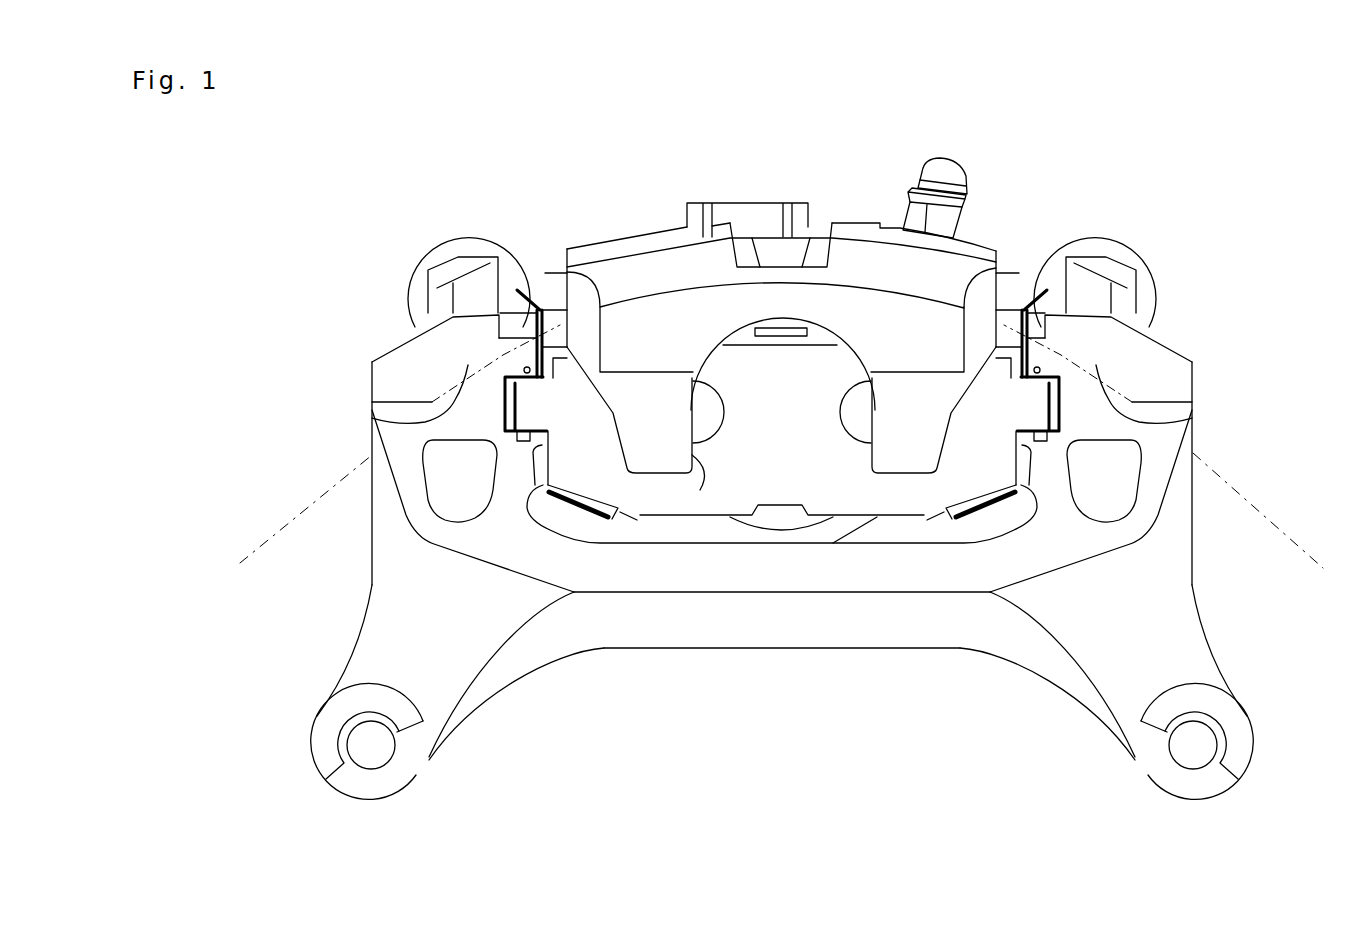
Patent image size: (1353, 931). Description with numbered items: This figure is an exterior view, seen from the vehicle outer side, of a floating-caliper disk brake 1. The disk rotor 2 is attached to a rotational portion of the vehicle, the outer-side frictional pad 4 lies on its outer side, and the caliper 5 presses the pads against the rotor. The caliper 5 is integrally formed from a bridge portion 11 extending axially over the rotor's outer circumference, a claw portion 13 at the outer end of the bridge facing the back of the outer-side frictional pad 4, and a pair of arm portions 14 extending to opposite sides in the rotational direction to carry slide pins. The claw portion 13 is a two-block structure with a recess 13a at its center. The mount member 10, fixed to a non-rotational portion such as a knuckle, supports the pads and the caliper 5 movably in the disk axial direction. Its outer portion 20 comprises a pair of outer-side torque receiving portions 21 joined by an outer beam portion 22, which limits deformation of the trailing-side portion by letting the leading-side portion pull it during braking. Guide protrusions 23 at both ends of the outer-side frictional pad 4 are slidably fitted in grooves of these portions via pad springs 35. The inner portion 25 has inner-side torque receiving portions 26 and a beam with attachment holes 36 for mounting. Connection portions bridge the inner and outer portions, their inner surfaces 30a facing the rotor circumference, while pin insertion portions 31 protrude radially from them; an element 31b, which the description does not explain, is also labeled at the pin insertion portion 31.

The disk brake 1 is at (1155, 222).
The disk rotor 2 is at (1250, 491).
The outer-side frictional pad 4 is at (798, 373).
The caliper 5 is at (586, 232).
The mount member 10 is at (1033, 243).
The bridge portion 11 is at (643, 238).
The claw portion 13 is at (900, 453).
The recess 13a is at (700, 477).
The arm portions 14 is at (545, 283).
The outer portion 20 is at (812, 591).
The outer-side torque receiving portions 21 is at (407, 473).
The outer beam portion 22 is at (973, 578).
The guide protrusions 23 is at (512, 328).
The inner portion 25 is at (731, 650).
The inner-side torque receiving portions 26 is at (447, 673).
The inner surfaces 30a is at (372, 403).
The pin insertion portions 31 is at (430, 287).
The guide pin 31b is at (480, 284).
The pad springs 35 is at (580, 512).
The attachment holes 36 is at (380, 745).